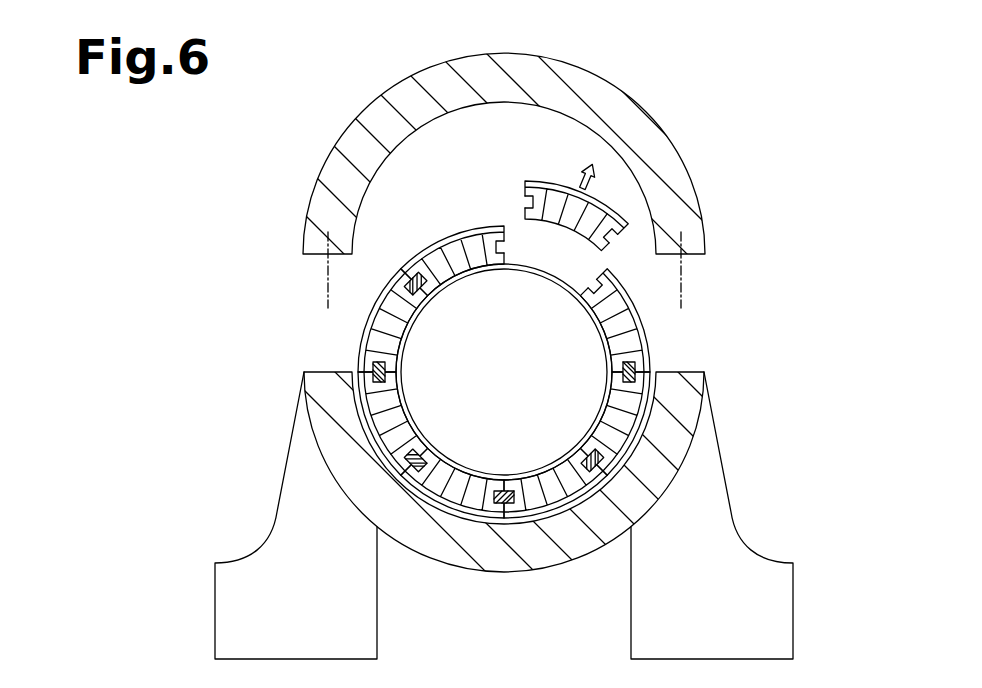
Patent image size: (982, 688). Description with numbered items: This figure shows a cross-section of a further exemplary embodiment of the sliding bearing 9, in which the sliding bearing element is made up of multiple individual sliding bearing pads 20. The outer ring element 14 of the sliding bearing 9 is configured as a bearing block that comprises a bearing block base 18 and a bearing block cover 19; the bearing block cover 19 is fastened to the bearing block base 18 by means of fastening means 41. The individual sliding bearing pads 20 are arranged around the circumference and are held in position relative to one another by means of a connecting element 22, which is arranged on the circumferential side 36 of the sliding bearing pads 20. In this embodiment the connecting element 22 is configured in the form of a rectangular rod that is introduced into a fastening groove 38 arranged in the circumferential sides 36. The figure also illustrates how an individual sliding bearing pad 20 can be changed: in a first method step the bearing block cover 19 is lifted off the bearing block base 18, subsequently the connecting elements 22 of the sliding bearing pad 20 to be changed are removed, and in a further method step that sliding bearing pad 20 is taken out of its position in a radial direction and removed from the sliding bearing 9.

The sliding bearing 9 is at (818, 102).
The outer ring element 14 is at (312, 465).
The bearing block base 18 is at (397, 530).
The bearing block cover 19 is at (604, 93).
The sliding bearing pads 20 is at (633, 430).
The connecting element 22 is at (636, 376).
The circumferential side 36 is at (520, 197).
The fastening groove 38 is at (547, 178).
The fastening means 41 is at (326, 292).